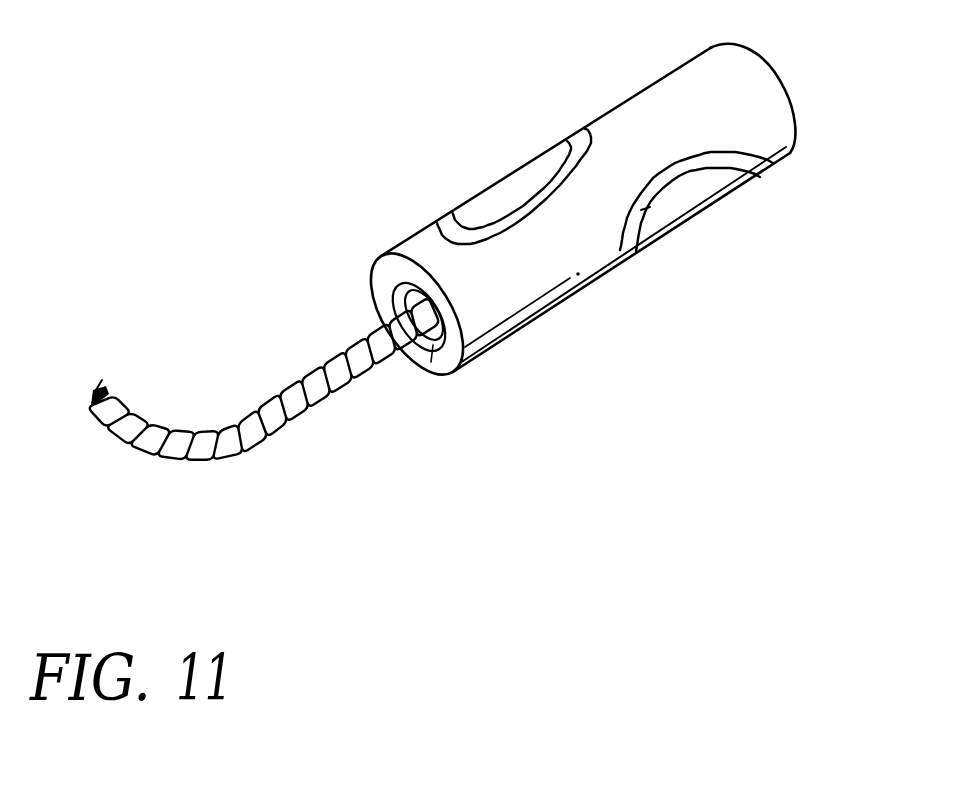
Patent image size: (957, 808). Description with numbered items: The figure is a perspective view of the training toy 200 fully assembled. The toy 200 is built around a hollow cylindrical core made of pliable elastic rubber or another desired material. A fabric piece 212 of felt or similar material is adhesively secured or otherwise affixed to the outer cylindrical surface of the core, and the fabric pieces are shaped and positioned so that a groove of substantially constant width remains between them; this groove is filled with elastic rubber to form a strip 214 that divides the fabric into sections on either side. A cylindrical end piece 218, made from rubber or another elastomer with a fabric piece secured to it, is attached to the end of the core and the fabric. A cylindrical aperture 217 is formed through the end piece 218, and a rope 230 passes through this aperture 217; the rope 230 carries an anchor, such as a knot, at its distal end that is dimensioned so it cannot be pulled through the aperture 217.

The toy 200 is at (755, 209).
The fabric piece 212 is at (662, 92).
The strip 214 is at (644, 209).
The cylindrical aperture 217 is at (393, 285).
The cylindrical end piece 218 is at (428, 356).
The rope 230 is at (241, 464).